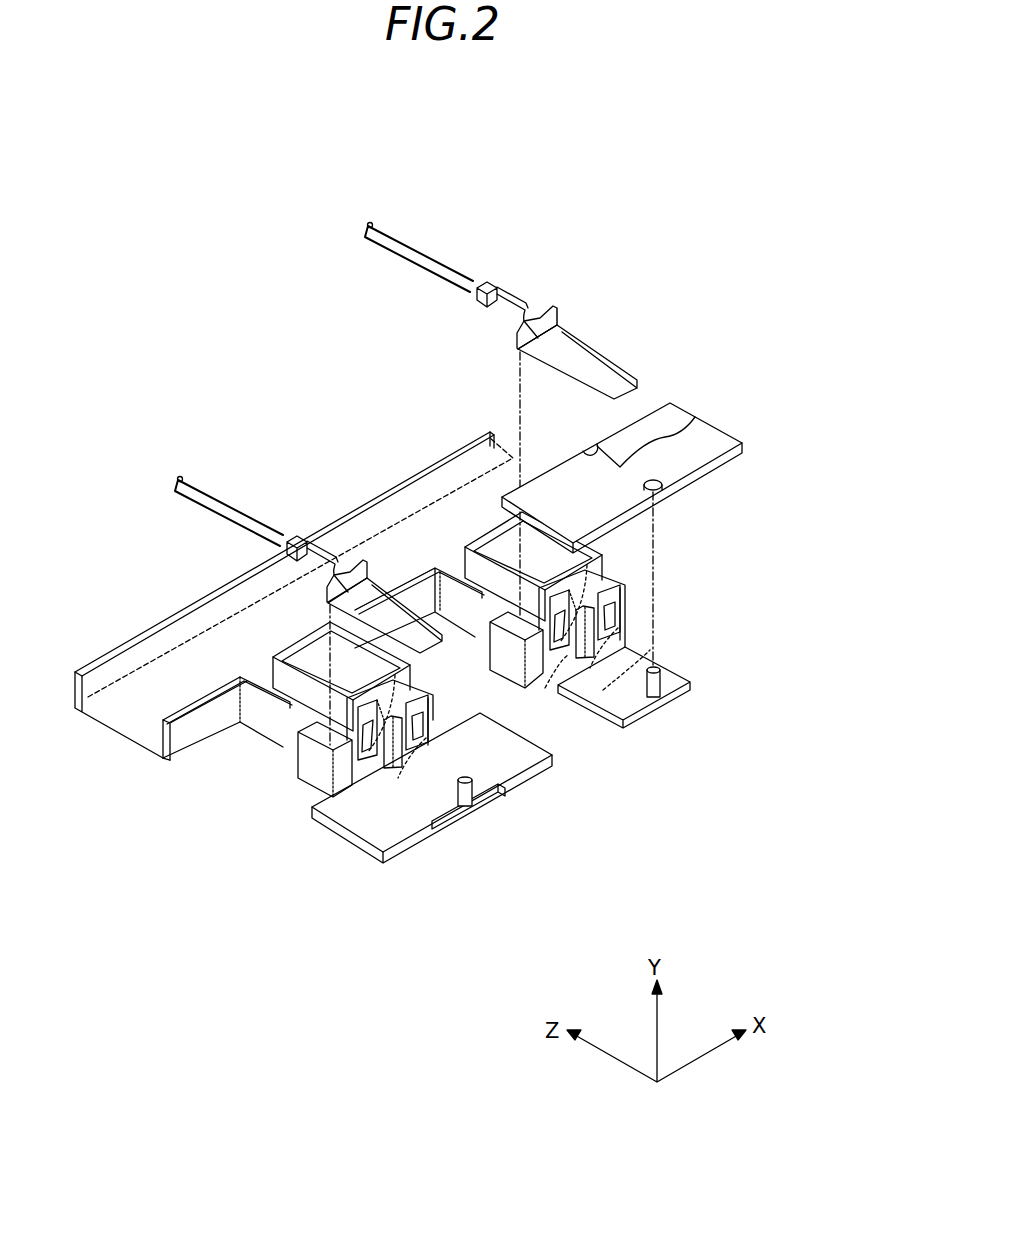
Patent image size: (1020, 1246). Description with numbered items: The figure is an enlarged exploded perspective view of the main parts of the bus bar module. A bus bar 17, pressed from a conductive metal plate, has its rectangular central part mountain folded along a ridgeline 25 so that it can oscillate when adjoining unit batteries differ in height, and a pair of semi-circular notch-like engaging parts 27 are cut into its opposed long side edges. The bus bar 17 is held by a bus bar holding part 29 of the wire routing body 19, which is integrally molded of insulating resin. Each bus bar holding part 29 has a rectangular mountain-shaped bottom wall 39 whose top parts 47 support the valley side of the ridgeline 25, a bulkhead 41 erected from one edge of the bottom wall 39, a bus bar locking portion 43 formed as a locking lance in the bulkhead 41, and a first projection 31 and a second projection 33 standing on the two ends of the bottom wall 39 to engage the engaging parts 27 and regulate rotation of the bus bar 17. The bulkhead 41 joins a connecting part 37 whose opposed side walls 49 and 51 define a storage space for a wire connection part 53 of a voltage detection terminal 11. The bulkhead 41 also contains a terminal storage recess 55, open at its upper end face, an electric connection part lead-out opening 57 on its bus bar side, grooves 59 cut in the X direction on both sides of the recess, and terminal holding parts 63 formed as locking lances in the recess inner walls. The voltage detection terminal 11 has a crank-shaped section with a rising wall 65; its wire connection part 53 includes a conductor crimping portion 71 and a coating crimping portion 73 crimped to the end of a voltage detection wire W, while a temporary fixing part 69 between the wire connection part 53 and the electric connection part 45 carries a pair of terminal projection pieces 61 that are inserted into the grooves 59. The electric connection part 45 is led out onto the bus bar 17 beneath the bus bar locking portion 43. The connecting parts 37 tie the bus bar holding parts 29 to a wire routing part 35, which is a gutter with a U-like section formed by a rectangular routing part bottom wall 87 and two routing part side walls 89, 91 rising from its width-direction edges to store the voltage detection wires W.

The voltage detection terminal 11 is at (410, 590).
The bus bar 17 is at (760, 443).
The wire routing body 19 is at (276, 596).
The ridgeline 25 is at (690, 420).
The engaging part 27 is at (588, 447).
The bus bar holding part 29 is at (506, 735).
The first projection 31 is at (668, 680).
The second projection 33 is at (588, 662).
The wire routing part 35 is at (455, 490).
The connecting part 37 is at (362, 596).
The bottom wall 39 is at (668, 690).
The bulkhead 41 is at (612, 578).
The bus bar locking portion 43 is at (612, 620).
The electric connection part 45 is at (392, 610).
The top part 47 is at (640, 700).
The side wall 49 is at (275, 675).
The side wall 51 is at (240, 705).
The wire connection part 53 is at (402, 361).
The terminal storage recess 55 is at (575, 608).
The electric connection part lead-out opening 57 is at (555, 680).
The groove 59 is at (558, 605).
The terminal projection piece 61 is at (560, 310).
The terminal holding part 63 is at (540, 640).
The rising wall 65 is at (540, 320).
The temporary fixing part 69 is at (575, 280).
The conductor crimping portion 71 is at (328, 555).
The coating crimping portion 73 is at (290, 535).
The routing part bottom wall 87 is at (180, 655).
The routing part side wall 89 is at (120, 640).
The routing part side wall 91 is at (115, 722).
The voltage detection wire W is at (205, 485).